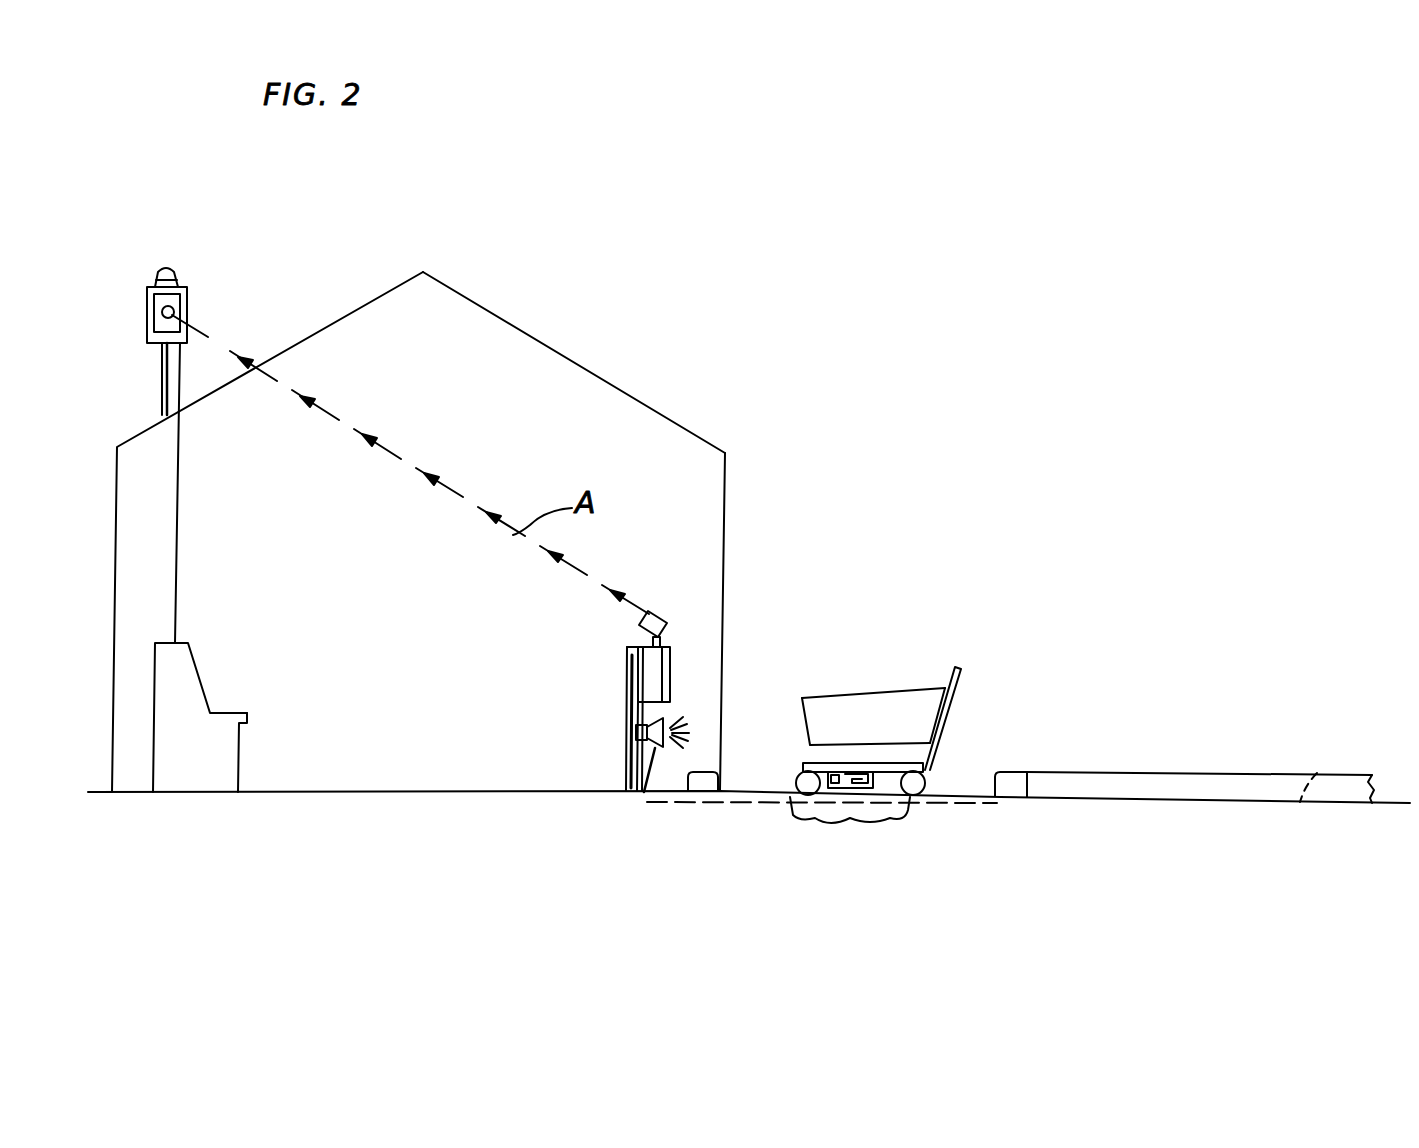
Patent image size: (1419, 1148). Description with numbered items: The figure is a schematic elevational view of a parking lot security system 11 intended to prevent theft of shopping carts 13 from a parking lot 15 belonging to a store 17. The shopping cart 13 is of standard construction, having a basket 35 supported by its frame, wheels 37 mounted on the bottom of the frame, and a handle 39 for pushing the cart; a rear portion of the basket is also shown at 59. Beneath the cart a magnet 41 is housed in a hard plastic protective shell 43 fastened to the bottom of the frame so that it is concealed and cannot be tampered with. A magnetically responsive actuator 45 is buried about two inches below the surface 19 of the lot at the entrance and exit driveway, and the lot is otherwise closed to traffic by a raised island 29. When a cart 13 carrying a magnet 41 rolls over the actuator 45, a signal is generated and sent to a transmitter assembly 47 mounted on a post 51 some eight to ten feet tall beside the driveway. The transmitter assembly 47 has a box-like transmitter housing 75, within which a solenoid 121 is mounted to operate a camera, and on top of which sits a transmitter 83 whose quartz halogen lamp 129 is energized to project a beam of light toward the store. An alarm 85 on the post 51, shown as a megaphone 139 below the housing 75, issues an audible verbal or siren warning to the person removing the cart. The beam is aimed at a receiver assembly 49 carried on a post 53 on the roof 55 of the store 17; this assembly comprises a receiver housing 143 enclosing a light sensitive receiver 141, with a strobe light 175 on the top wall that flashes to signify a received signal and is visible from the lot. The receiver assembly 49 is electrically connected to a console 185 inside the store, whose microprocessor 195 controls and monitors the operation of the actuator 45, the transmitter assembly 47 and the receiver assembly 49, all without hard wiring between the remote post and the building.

The parking lot security system 11 is at (800, 592).
The shopping cart 13 is at (832, 697).
The parking lot 15 is at (1317, 773).
The store 17 is at (116, 555).
The surface 19 is at (967, 795).
The island 29 is at (1205, 773).
The basket 35 is at (893, 688).
The wheels 37 is at (793, 787).
The handle 39 is at (960, 665).
The magnet 41 is at (862, 773).
The protective shell 43 is at (837, 780).
The magnetically responsive actuator 45 is at (858, 807).
The transmitter assembly 47 is at (600, 678).
The receiver assembly 49 is at (216, 302).
The post 51 is at (625, 757).
The post 53 is at (162, 358).
The roof 55 is at (567, 357).
The basket rear wall 59 is at (950, 703).
The transmitter housing 75 is at (672, 677).
The transmitter 83 is at (676, 615).
The alarm 85 is at (647, 797).
The solenoid 121 is at (750, 793).
The quartz halogen lamp 129 is at (637, 633).
The megaphone 139 is at (657, 717).
The light sensitive receiver 141 is at (138, 306).
The receiver housing 143 is at (158, 267).
The strobe light 175 is at (177, 268).
The console 185 is at (203, 678).
The microprocessor 195 is at (255, 749).